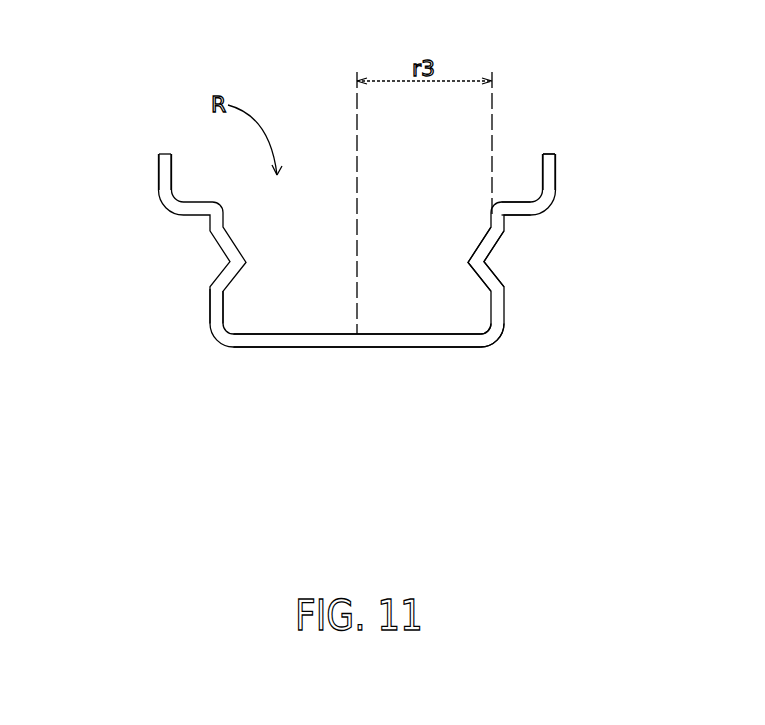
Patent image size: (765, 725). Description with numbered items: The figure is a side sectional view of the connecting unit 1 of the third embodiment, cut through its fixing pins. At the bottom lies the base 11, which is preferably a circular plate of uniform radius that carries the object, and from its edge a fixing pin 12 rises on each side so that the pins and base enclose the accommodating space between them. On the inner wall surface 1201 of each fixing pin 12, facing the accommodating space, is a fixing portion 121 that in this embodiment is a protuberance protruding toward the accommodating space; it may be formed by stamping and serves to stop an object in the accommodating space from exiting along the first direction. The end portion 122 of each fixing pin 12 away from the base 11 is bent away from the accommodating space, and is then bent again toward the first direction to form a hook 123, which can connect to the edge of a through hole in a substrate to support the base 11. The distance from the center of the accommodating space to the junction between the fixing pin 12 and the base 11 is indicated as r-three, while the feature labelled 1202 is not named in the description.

The connecting unit 1 is at (109, 89).
The base 11 is at (363, 340).
The fixing pin 12 is at (158, 167).
The fixing portion 121 is at (482, 262).
The end portion 122 is at (525, 209).
The hook 123 is at (548, 172).
The inner wall surface 1201 is at (487, 312).
The outer corner 1202 is at (503, 312).